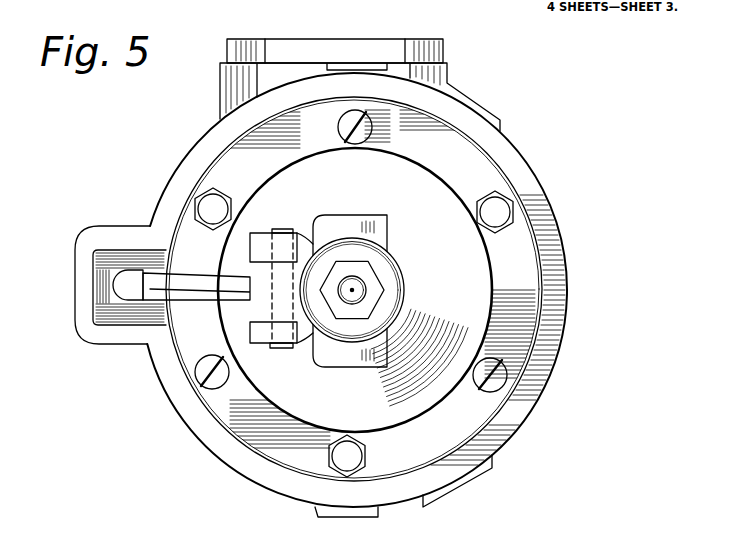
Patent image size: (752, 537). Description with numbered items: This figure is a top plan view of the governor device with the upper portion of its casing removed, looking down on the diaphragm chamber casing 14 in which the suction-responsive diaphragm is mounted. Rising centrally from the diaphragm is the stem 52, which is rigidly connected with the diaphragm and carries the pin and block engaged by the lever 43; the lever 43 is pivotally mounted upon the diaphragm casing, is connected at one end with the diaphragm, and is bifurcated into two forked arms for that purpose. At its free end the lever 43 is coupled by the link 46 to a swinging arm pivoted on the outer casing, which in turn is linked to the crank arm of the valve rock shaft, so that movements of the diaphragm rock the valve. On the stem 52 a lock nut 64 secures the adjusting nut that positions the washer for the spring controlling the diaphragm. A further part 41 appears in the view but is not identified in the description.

The diaphragm chamber casing 14 is at (523, 243).
The clamp block 41 is at (275, 345).
The lever 43 is at (237, 288).
The link 46 is at (146, 310).
The stem 52 is at (358, 296).
The lock nut 64 is at (371, 277).